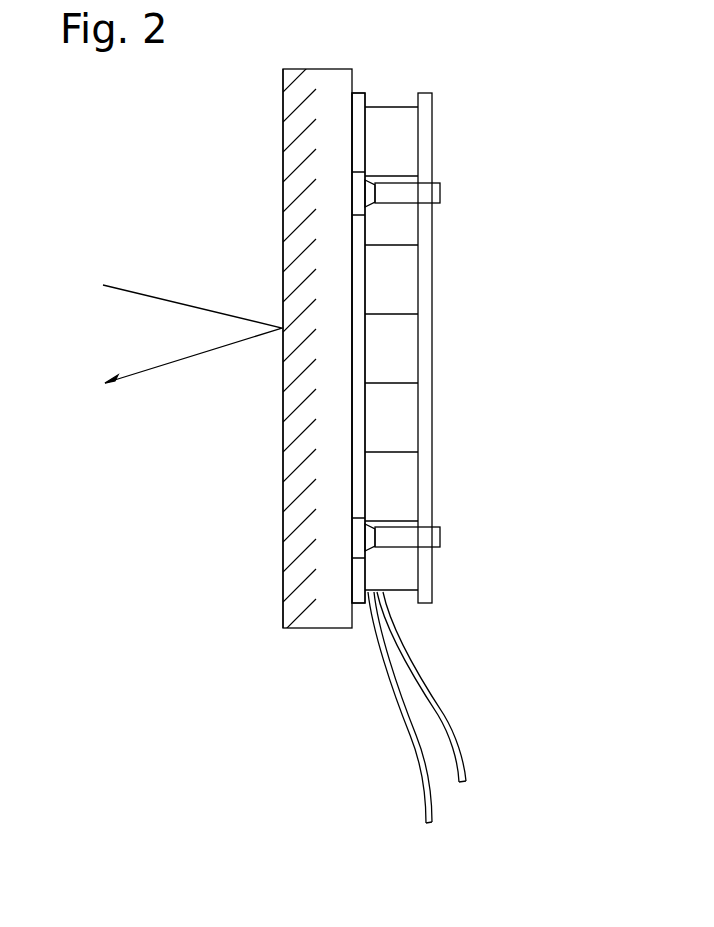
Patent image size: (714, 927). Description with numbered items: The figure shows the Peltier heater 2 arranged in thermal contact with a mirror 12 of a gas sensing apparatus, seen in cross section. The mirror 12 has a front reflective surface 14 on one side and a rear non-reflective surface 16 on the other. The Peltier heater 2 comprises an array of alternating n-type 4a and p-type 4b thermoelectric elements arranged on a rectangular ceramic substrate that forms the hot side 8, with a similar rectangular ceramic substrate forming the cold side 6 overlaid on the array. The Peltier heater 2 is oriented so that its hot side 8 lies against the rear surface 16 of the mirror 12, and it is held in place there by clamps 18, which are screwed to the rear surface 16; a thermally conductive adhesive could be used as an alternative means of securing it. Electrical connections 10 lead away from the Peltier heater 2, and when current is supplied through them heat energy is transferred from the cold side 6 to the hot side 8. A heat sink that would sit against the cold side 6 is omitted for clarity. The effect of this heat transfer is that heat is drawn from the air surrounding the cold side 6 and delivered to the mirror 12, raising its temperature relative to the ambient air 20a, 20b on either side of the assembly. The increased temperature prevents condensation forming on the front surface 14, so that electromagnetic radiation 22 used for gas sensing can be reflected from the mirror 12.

The Peltier heater 2 is at (483, 461).
The n-type thermoelectric elements 4a is at (403, 276).
The p-type thermoelectric elements 4b is at (403, 358).
The cold side 6 is at (424, 125).
The hot side 8 is at (360, 103).
The electrical connections 10 is at (420, 753).
The mirror 12 is at (327, 80).
The front surface 14 is at (282, 107).
The rear surface 16 is at (353, 77).
The clamps 18 is at (432, 192).
The ambient air 20a is at (531, 343).
The ambient air 20b is at (205, 184).
The electromagnetic radiation 22 is at (130, 290).